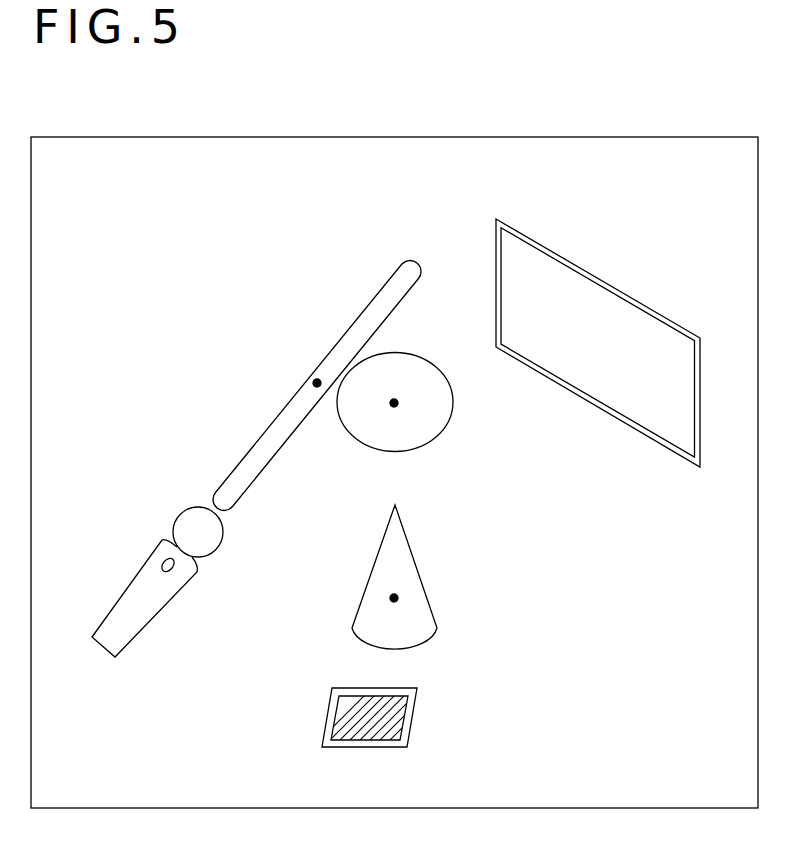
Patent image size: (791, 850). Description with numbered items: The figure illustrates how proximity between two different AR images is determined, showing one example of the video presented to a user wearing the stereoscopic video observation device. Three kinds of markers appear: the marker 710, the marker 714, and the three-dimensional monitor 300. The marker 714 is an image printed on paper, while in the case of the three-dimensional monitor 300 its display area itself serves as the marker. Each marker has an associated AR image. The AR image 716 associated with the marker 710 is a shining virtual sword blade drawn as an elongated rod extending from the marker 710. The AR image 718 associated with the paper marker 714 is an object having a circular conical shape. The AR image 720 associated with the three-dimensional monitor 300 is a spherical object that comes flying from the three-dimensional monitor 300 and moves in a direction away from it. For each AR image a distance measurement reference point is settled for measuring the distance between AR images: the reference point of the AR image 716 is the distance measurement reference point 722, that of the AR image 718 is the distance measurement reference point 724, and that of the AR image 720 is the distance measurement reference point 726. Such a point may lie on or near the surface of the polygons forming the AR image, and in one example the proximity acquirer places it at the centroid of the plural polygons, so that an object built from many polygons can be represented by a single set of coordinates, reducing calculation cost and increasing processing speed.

The three-dimensional monitor 300 is at (597, 278).
The marker 710 is at (124, 590).
The marker 714 is at (413, 716).
The AR image 716 is at (248, 452).
The AR image 718 is at (417, 568).
The AR image 720 is at (455, 404).
The distance measurement reference point 722 is at (322, 374).
The distance measurement reference point 724 is at (388, 596).
The distance measurement reference point 726 is at (392, 408).